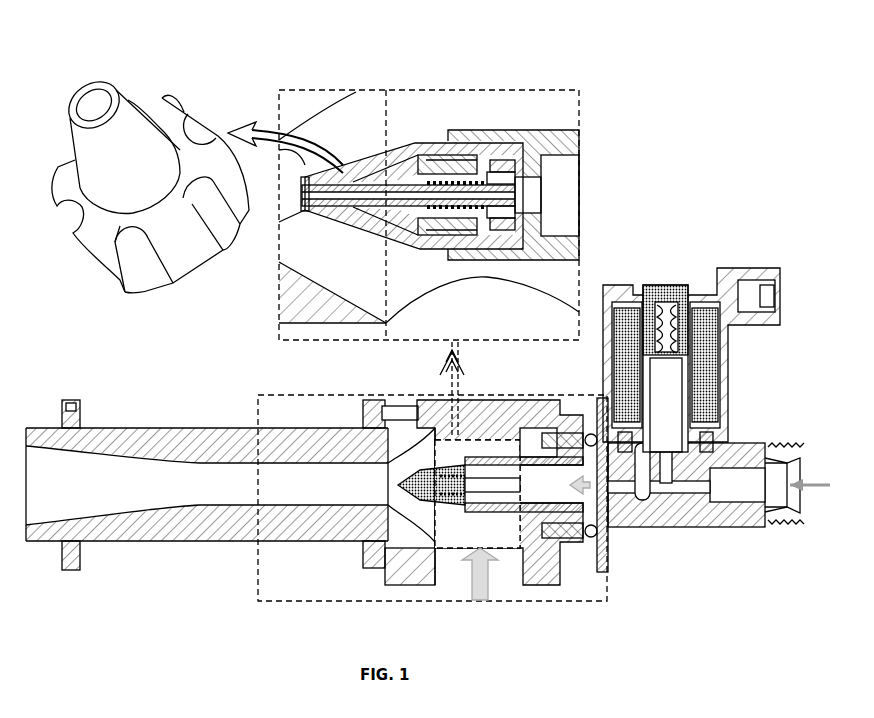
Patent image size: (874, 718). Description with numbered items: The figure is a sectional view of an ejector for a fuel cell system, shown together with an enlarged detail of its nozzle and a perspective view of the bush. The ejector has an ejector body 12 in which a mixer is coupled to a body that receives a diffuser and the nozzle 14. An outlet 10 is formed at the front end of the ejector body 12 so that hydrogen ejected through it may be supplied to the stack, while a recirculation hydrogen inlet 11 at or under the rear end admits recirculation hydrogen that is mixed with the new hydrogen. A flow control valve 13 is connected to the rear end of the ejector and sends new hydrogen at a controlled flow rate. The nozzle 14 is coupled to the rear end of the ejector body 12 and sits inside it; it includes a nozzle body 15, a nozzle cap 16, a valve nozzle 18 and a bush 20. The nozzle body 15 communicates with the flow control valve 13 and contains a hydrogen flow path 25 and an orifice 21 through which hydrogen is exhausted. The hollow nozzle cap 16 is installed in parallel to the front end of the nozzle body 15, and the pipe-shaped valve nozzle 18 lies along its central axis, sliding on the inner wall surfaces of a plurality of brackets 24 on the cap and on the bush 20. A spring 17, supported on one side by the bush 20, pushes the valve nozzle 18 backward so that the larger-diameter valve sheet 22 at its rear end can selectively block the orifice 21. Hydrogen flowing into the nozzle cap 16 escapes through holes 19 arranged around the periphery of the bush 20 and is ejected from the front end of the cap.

The outlet 10 is at (95, 500).
The recirculation hydrogen inlet 11 is at (515, 565).
The ejector body 12 is at (382, 577).
The flow control valve 13 is at (733, 388).
The nozzle 14 is at (534, 130).
The nozzle body 15 is at (575, 143).
The nozzle cap 16 is at (368, 165).
The spring 17 is at (462, 180).
The valve nozzle 18 is at (318, 165).
The holes 19 is at (140, 265).
The bush 20 is at (92, 235).
The orifice 21 is at (540, 192).
The valve sheet 22 is at (490, 158).
The brackets 24 is at (340, 230).
The hydrogen flow path 25 is at (565, 215).